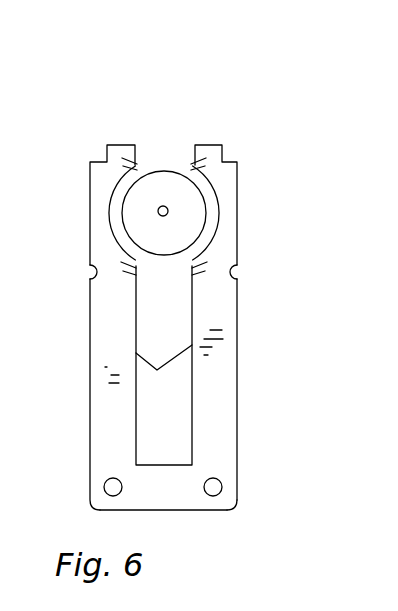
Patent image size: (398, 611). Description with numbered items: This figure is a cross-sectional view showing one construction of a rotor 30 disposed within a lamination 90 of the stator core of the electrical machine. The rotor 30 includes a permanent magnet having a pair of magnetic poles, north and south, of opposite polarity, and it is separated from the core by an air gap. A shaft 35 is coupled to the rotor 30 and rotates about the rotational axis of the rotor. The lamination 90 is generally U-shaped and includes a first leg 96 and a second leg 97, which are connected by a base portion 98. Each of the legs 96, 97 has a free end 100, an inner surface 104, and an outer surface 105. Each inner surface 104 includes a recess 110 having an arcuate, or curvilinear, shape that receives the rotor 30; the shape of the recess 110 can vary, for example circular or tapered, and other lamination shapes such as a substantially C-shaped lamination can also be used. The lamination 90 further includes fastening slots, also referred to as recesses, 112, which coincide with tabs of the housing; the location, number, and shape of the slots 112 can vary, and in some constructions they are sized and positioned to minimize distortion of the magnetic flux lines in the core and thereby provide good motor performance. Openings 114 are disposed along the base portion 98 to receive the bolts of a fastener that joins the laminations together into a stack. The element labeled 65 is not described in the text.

The rotor 30 is at (198, 190).
The shaft 35 is at (165, 206).
The housing 65 is at (0, 131).
The lamination 90 is at (90, 468).
The first leg 96 is at (112, 330).
The second leg 97 is at (218, 395).
The base portion 98 is at (169, 491).
The free end 100 is at (206, 152).
The inner surface 104 is at (157, 370).
The outer surface 105 is at (237, 315).
The recess 110 is at (110, 200).
The fastening slots 112 is at (98, 150).
The openings 114 is at (104, 485).